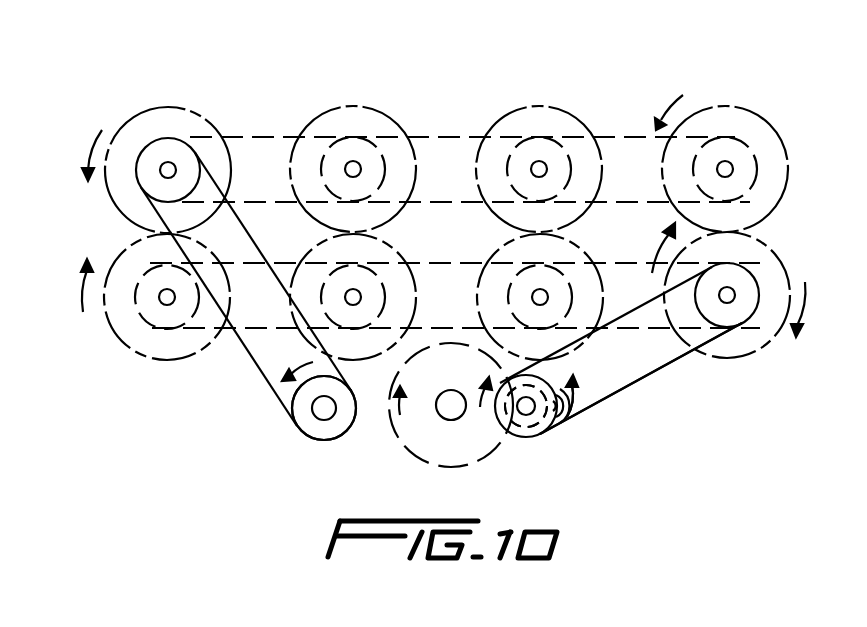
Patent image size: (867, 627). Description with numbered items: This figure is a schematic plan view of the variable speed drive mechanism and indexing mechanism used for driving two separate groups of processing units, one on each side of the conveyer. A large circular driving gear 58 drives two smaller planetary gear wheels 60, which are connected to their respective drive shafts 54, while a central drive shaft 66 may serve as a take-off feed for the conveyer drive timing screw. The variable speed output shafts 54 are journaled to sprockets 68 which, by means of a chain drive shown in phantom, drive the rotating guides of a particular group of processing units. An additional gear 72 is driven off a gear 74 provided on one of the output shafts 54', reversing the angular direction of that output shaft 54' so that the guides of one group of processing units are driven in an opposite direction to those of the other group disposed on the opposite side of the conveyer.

The output shaft 54' is at (286, 416).
The sprocket 68 is at (320, 440).
The drive shaft 66 is at (452, 390).
The circular driving gear 58 is at (476, 460).
The additional gear 72 is at (500, 412).
The drive shaft 54 is at (619, 409).
The gear 74 is at (566, 376).
The planetary gear wheel 60 is at (568, 423).